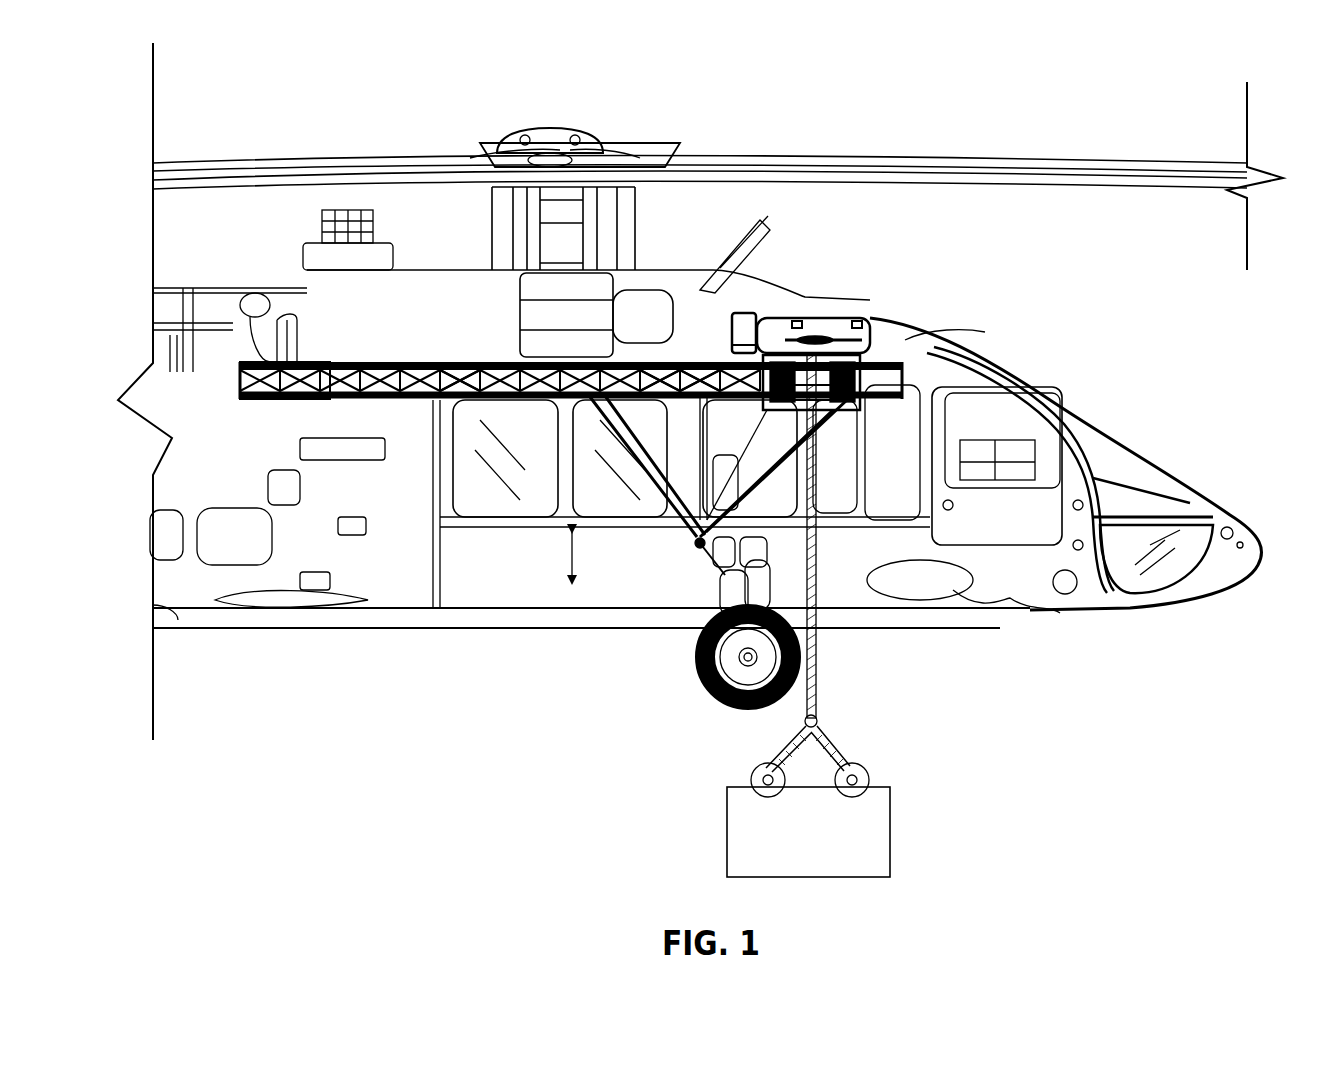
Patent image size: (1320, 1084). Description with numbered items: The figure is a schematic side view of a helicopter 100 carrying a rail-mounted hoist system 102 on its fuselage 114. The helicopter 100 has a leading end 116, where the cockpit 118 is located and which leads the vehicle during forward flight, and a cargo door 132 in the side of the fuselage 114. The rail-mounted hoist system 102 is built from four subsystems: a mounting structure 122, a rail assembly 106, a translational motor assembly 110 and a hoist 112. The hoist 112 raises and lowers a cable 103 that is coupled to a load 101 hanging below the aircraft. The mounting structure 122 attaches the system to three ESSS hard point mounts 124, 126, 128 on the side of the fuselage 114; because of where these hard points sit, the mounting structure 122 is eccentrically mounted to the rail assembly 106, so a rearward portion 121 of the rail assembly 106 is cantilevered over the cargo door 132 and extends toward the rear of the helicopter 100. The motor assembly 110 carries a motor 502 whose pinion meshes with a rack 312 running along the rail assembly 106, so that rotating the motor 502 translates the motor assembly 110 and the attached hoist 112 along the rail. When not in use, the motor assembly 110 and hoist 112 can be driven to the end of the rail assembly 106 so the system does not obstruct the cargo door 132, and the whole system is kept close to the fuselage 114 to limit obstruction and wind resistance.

The helicopter 100 is at (968, 146).
The load 101 is at (807, 840).
The rail-mounted hoist system 102 is at (906, 300).
The cable 103 is at (816, 693).
The rail assembly 106 is at (462, 362).
The translational motor assembly 110 is at (833, 268).
The hoist 112 is at (815, 332).
The fuselage 114 is at (375, 578).
The leading end 116 is at (1190, 444).
The cockpit 118 is at (1055, 416).
The rearward portion 121 is at (292, 362).
The mounting structure 122 is at (668, 495).
The ESSS hard point mount 124 is at (668, 362).
The ESSS hard point mount 126 is at (702, 549).
The ESSS hard point mount 128 is at (708, 362).
The cargo door 132 is at (535, 578).
The rack 312 is at (490, 362).
The motor 502 is at (748, 316).